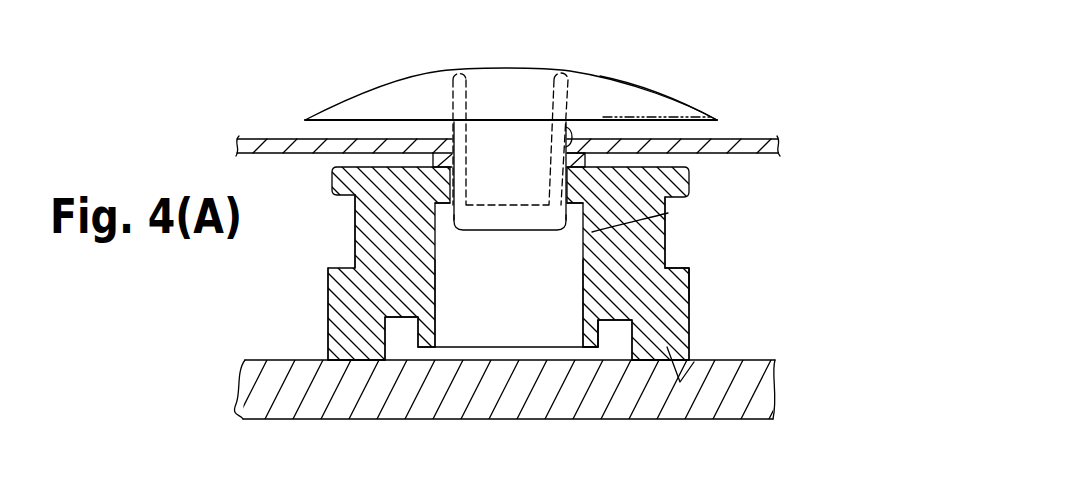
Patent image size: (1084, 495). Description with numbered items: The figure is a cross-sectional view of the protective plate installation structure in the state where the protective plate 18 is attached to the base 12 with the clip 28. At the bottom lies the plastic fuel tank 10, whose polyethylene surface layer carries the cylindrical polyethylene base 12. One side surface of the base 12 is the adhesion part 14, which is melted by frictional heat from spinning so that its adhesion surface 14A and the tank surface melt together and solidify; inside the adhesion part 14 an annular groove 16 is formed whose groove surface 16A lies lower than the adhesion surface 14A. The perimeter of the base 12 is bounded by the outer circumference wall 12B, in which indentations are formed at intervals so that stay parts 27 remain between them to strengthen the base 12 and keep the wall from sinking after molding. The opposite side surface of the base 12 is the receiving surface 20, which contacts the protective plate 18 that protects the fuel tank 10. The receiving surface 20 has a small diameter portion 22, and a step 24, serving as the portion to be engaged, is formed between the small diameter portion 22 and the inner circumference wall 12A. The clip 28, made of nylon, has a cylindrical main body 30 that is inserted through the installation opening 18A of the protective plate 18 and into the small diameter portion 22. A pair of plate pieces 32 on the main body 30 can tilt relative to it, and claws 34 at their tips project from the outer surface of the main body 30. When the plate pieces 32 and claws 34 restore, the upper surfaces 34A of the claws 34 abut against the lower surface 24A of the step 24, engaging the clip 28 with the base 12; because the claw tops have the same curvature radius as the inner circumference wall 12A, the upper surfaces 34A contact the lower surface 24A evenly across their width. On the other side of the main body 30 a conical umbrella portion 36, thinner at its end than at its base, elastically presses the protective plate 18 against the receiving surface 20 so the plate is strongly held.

The fuel tank 10 is at (765, 388).
The base 12 is at (696, 317).
The inner circumference wall 12A is at (582, 296).
The outer circumference wall 12B is at (690, 294).
The adhesion part 14 is at (670, 347).
The adhesion surface 14A is at (703, 366).
The annular groove 16 is at (632, 340).
The groove surface 16A is at (597, 347).
The protective plate 18 is at (782, 146).
The installation opening 18A is at (565, 140).
The receiving surface 20 is at (678, 163).
The small diameter portion 22 is at (440, 207).
The step 24 is at (565, 233).
The lower surface 24A is at (668, 213).
The stay parts 27 is at (666, 243).
The clip 28 is at (630, 68).
The main body 30 is at (497, 148).
The plate pieces 32 is at (534, 66).
The claws 34 is at (388, 139).
The upper surfaces 34A is at (418, 121).
The umbrella portion 36 is at (650, 93).